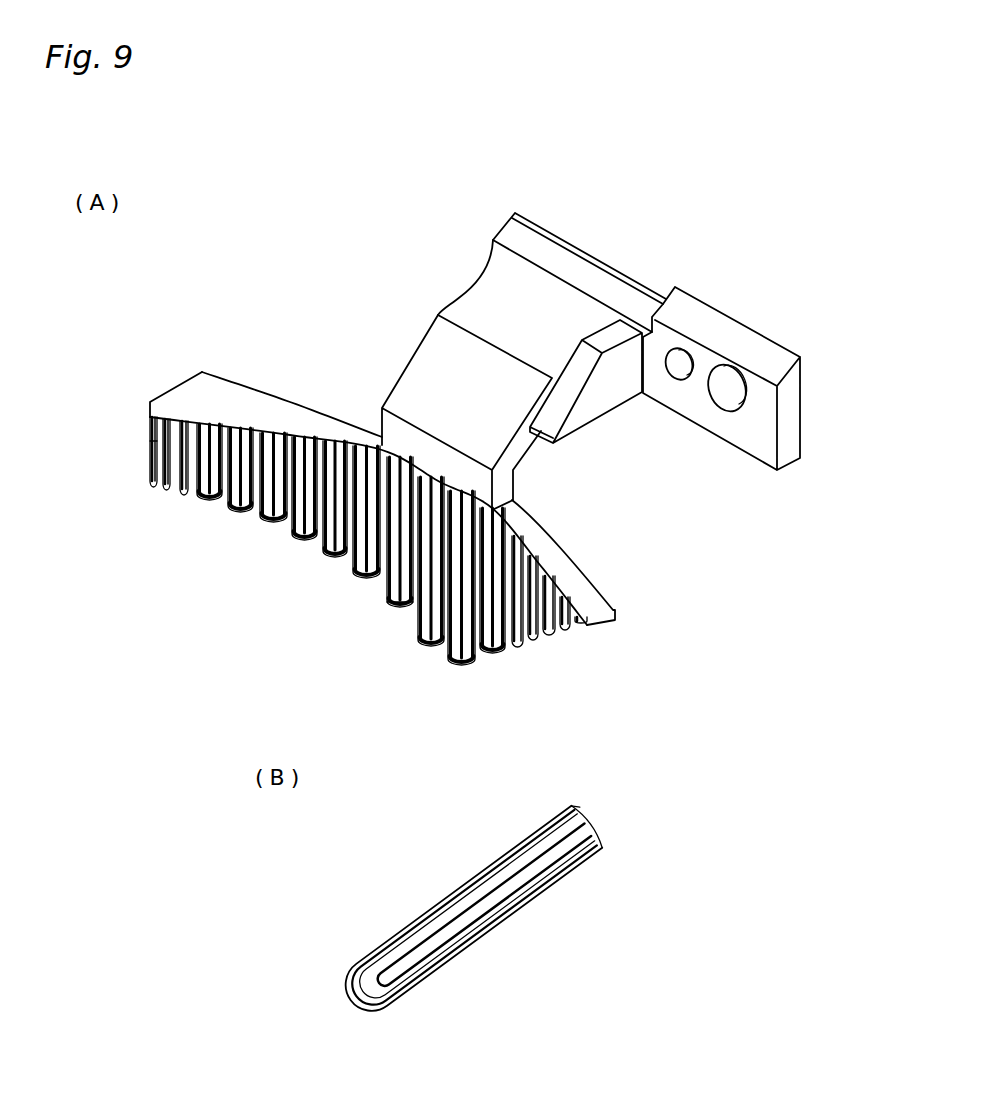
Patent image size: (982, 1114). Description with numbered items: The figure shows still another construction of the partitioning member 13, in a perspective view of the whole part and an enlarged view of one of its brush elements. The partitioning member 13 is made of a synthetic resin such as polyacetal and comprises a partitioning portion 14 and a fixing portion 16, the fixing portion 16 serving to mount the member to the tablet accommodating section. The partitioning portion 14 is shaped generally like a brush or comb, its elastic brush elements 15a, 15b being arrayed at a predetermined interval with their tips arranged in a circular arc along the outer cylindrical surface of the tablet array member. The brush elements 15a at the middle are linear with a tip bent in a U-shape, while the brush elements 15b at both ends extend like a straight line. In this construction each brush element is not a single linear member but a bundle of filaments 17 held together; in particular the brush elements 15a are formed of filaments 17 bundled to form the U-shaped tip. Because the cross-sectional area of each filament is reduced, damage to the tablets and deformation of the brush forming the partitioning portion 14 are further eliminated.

The partitioning member 13 is at (638, 382).
The partitioning portion 14 is at (548, 543).
The brush elements 15a is at (322, 557).
The brush elements 15b is at (185, 495).
The fixing portion 16 is at (720, 428).
The filaments 17 is at (150, 449).